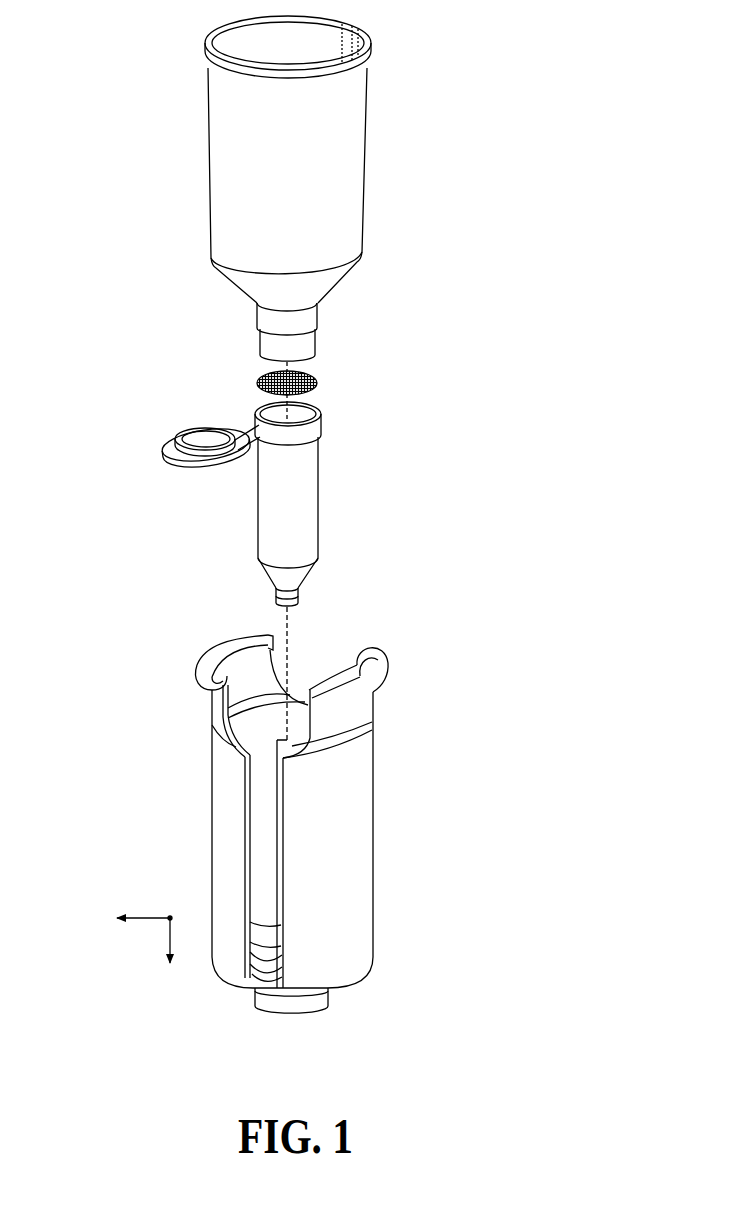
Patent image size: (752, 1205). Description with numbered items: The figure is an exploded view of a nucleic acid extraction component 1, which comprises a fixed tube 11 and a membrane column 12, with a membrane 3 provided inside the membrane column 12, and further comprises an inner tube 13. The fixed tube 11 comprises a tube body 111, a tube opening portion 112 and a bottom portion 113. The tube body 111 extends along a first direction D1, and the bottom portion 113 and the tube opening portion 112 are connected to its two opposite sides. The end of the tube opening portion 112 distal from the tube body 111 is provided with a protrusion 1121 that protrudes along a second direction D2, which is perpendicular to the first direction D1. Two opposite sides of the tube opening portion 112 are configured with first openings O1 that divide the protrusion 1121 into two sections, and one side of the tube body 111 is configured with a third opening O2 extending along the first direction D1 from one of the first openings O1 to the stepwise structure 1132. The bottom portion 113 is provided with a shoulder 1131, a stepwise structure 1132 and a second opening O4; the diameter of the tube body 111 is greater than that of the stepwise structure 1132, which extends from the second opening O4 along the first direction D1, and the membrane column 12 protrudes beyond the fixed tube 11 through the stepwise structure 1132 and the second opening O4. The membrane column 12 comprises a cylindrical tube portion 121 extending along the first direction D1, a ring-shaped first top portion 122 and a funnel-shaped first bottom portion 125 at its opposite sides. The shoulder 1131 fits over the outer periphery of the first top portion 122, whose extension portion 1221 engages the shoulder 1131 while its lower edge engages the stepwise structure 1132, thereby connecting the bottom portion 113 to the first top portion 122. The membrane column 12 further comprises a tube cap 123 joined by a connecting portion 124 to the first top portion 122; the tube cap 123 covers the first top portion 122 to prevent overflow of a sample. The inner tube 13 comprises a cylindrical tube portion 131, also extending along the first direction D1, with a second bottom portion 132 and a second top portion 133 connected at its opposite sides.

The nucleic acid extraction component 1 is at (482, 877).
The fixed tube 11 is at (314, 834).
The tube body 111 is at (357, 775).
The tube opening portion 112 is at (292, 685).
The protrusion 1121 is at (204, 664).
The bottom portion 113 is at (351, 989).
The shoulder 1131 is at (350, 975).
The stepwise structure 1132 is at (303, 1003).
The membrane column 12 is at (318, 491).
The cylindrical tube portion 121 is at (305, 522).
The first top portion 122 is at (322, 430).
The extension portion 1221 is at (322, 412).
The tube cap 123 is at (205, 436).
The connecting portion 124 is at (254, 426).
The first bottom portion 125 is at (278, 572).
The inner tube 13 is at (342, 188).
The cylindrical tube portion 131 is at (353, 117).
The second bottom portion 132 is at (305, 302).
The second top portion 133 is at (368, 50).
The membrane 3 is at (318, 380).
The first openings O1 is at (319, 653).
The third opening O2 is at (258, 822).
The second opening O4 is at (251, 980).
The first direction D1 is at (169, 959).
The second direction D2 is at (125, 917).